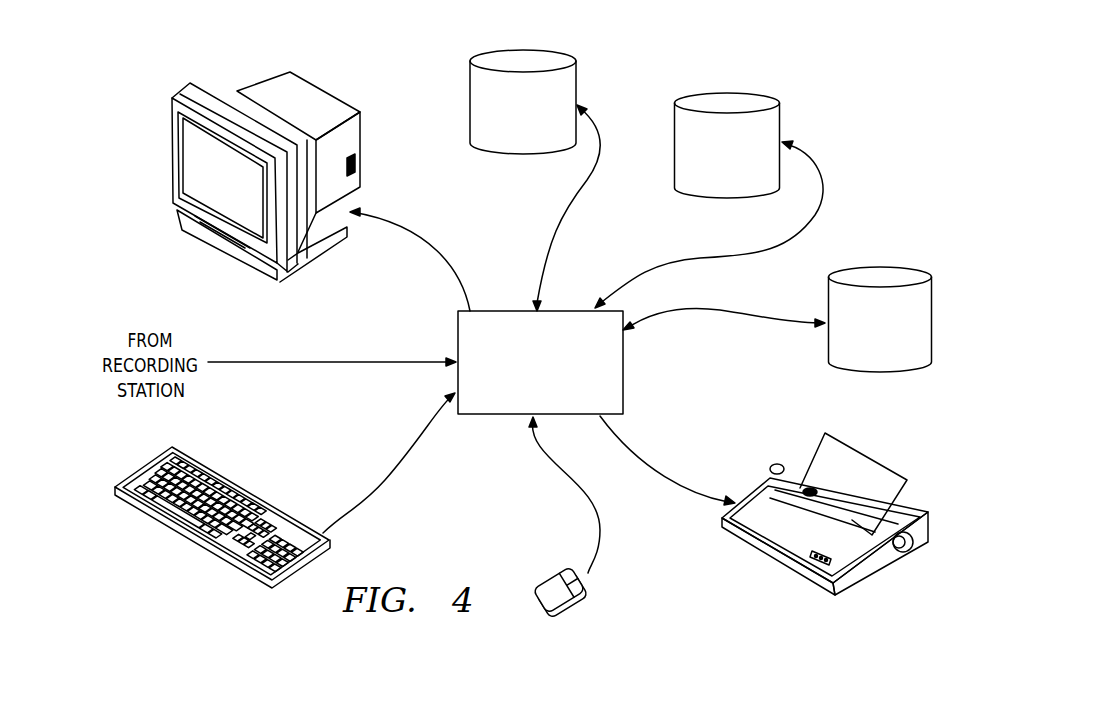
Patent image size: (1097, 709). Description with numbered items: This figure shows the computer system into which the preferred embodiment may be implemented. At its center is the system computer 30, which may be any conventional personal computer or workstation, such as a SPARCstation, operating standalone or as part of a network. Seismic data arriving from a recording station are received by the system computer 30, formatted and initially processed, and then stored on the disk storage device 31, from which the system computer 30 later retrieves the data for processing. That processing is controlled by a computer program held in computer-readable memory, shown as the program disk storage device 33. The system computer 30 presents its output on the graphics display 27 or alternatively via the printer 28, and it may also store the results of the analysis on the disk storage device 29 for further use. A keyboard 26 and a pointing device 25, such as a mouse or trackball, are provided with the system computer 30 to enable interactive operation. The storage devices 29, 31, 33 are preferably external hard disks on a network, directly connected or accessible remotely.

The pointing device 25 is at (541, 585).
The keyboard 26 is at (201, 542).
The graphics display 27 is at (238, 91).
The printer 28 is at (880, 571).
The disk storage device 29 is at (911, 267).
The system computer 30 is at (623, 386).
The disk storage device 31 is at (747, 93).
The program disk storage device 33 is at (470, 82).